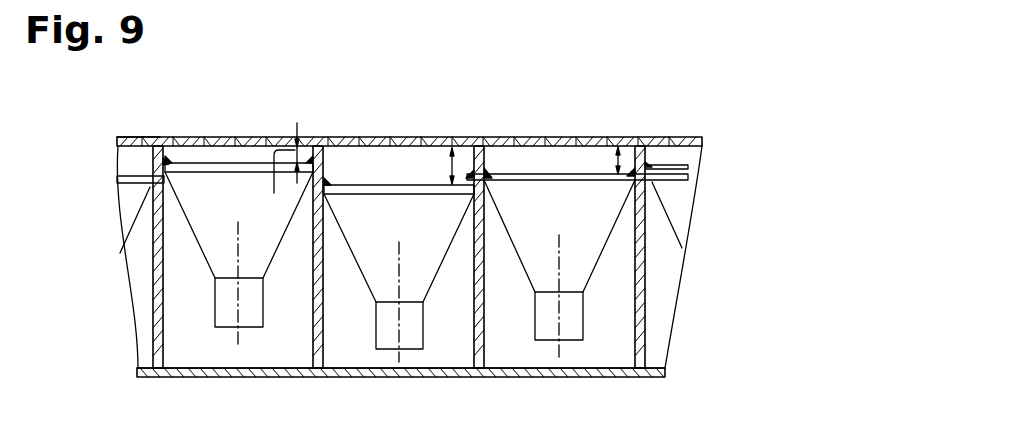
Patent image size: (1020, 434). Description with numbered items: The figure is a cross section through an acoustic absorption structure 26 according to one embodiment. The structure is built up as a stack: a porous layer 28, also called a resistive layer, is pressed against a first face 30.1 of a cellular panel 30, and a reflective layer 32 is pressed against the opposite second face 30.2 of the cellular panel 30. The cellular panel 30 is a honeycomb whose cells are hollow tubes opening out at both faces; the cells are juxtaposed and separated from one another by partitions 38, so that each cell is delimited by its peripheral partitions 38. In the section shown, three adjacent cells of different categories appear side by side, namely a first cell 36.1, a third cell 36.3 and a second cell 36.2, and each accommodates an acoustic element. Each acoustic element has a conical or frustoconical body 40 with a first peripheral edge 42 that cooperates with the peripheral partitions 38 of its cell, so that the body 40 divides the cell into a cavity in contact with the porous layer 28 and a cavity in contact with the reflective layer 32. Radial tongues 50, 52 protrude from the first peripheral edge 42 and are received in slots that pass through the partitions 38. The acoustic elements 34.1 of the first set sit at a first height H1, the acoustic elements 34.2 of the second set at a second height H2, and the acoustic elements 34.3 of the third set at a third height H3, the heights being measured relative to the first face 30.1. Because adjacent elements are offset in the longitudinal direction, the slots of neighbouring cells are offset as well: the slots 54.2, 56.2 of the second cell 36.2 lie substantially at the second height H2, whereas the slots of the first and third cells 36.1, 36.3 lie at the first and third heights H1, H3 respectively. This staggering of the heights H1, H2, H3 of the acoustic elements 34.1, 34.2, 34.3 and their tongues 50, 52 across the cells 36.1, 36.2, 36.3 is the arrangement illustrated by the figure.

The acoustic absorption structure 26 is at (684, 108).
The porous layer 28 is at (492, 108).
The cellular panel 30 is at (703, 148).
The first face 30.1 is at (245, 137).
The second face 30.2 is at (270, 378).
The reflective layer 32 is at (620, 386).
The acoustic element of the first set 34.1 is at (211, 172).
The acoustic element of the second set 34.2 is at (567, 168).
The acoustic element of the third set 34.3 is at (350, 176).
The first cell 36.1 is at (181, 378).
The second cell 36.2 is at (500, 360).
The third cell 36.3 is at (452, 358).
The partition 38 is at (318, 291).
The body 40 is at (208, 223).
The first peripheral edge 42 is at (177, 137).
The radial tongue 50 is at (482, 172).
The radial tongue 52 is at (653, 178).
The slot of the second cell 54.2 is at (476, 176).
The slot of the second cell 56.2 is at (641, 165).
The first height H1 is at (279, 169).
The second height H2 is at (598, 160).
The third height H3 is at (434, 166).